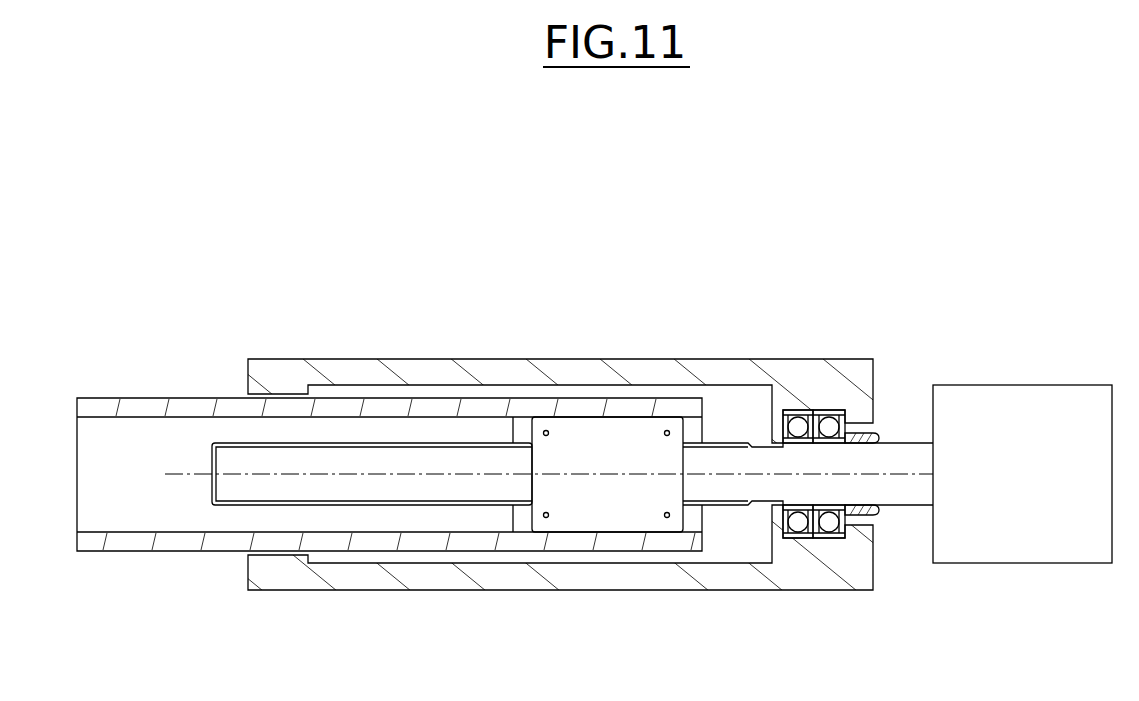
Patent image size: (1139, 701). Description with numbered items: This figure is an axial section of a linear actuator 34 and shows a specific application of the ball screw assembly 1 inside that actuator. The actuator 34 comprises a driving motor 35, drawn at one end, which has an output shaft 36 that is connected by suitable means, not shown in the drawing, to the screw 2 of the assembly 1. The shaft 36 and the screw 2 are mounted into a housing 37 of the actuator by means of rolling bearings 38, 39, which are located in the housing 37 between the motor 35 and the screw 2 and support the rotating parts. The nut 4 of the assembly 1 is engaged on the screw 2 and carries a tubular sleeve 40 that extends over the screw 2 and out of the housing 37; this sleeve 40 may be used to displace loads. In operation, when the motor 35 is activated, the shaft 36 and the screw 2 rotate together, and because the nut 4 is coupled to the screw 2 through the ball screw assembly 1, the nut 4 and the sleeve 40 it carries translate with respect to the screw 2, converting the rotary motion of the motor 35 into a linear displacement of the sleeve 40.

The ball screw assembly 1 is at (722, 514).
The screw 2 is at (443, 488).
The nut 4 is at (664, 542).
The linear actuator 34 is at (804, 333).
The driving motor 35 is at (1036, 486).
The output shaft 36 is at (902, 508).
The housing 37 is at (580, 574).
The rolling bearing 38 is at (800, 522).
The rolling bearing 39 is at (830, 522).
The tubular sleeve 40 is at (370, 538).